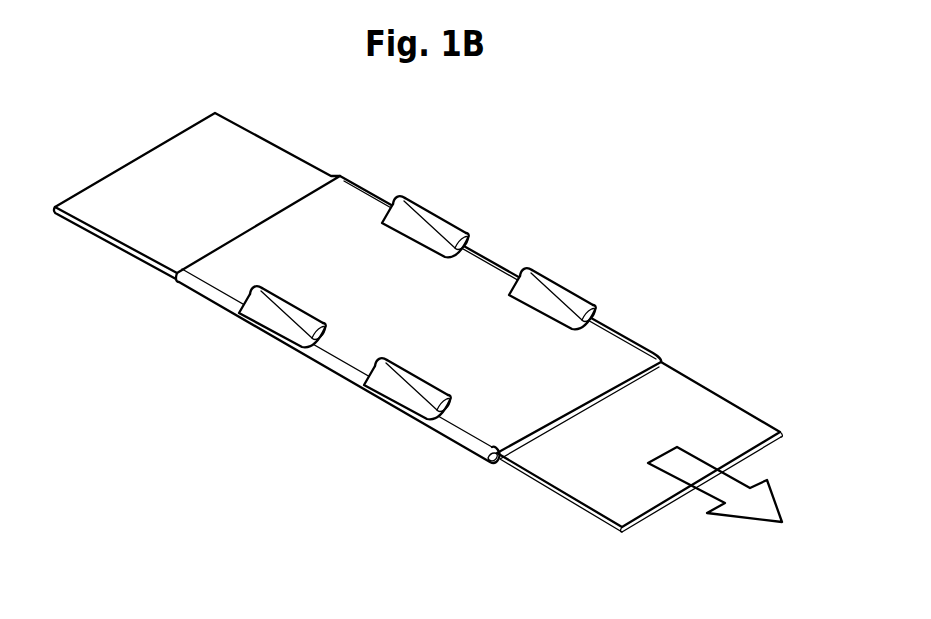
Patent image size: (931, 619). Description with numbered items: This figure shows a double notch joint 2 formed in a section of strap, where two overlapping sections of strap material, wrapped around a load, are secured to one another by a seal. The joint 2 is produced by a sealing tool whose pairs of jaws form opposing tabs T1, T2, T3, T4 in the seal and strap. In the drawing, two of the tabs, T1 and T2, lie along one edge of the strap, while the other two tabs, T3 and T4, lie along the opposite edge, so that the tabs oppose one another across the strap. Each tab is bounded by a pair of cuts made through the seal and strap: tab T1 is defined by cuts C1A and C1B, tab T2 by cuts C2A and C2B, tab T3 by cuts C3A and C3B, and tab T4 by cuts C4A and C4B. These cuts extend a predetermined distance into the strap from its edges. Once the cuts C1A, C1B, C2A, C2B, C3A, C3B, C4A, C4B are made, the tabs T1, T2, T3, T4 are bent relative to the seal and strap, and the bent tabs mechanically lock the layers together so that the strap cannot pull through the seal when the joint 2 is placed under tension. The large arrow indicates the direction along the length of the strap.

The double notch joint 2 is at (365, 169).
The tab T1 is at (459, 193).
The tab T2 is at (588, 266).
The tab T3 is at (369, 417).
The tab T4 is at (256, 341).
The cut C1A is at (426, 166).
The cut C1B is at (496, 215).
The cut C2A is at (625, 291).
The cut C2B is at (549, 240).
The cut C3A is at (420, 436).
The cut C3B is at (337, 390).
The cut C4A is at (224, 331).
The cut C4B is at (290, 360).